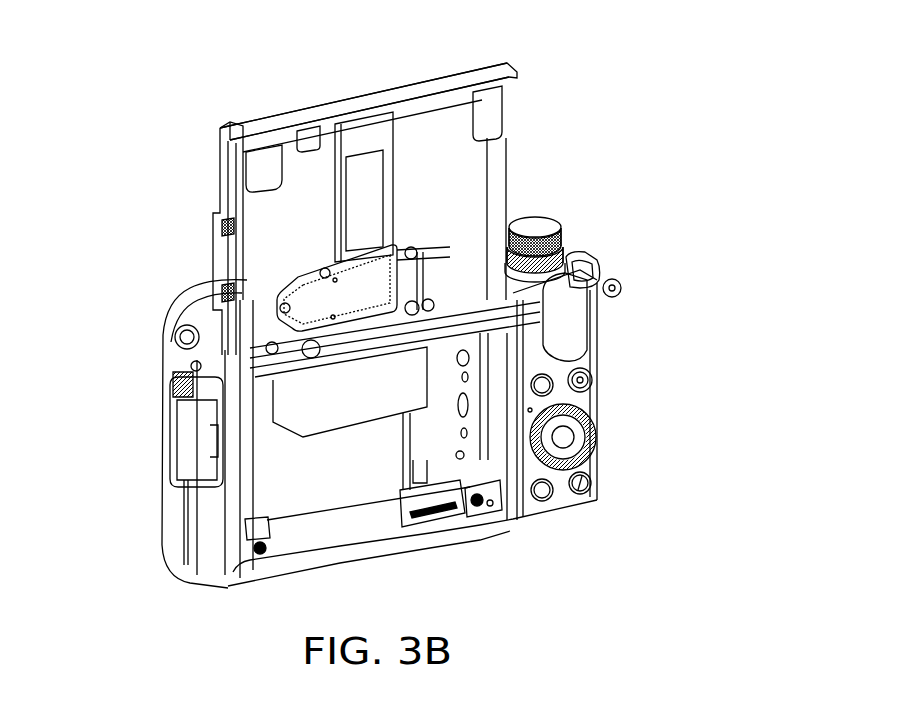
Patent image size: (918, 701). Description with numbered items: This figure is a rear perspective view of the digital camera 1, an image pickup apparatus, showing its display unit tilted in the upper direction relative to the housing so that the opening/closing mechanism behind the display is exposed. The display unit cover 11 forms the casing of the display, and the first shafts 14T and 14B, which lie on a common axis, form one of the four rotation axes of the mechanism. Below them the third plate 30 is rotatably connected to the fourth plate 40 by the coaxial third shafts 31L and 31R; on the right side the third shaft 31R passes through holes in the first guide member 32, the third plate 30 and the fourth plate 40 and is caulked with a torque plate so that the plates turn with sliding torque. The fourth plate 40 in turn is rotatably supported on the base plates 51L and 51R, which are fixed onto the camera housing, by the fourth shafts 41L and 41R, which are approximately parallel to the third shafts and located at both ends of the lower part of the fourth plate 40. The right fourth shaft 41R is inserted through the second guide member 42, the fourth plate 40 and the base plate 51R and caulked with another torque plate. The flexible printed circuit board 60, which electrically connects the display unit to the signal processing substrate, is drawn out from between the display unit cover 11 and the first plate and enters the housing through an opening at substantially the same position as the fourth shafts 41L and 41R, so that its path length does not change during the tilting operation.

The digital camera 1 is at (698, 90).
The display unit cover 11 is at (287, 112).
The first shaft 14B is at (410, 103).
The first shaft 14T is at (500, 317).
The third plate 30 is at (457, 167).
The first guide member 32 is at (523, 233).
The third shaft 31R is at (560, 237).
The third shaft 31L is at (240, 363).
The fourth plate 40 is at (273, 467).
The fourth shaft 41L is at (230, 558).
The fourth shaft 41R is at (490, 503).
The base plate 51L is at (257, 530).
The base plate 51R is at (493, 473).
The second guide member 42 is at (510, 527).
The flexible printed circuit board 60 is at (438, 497).